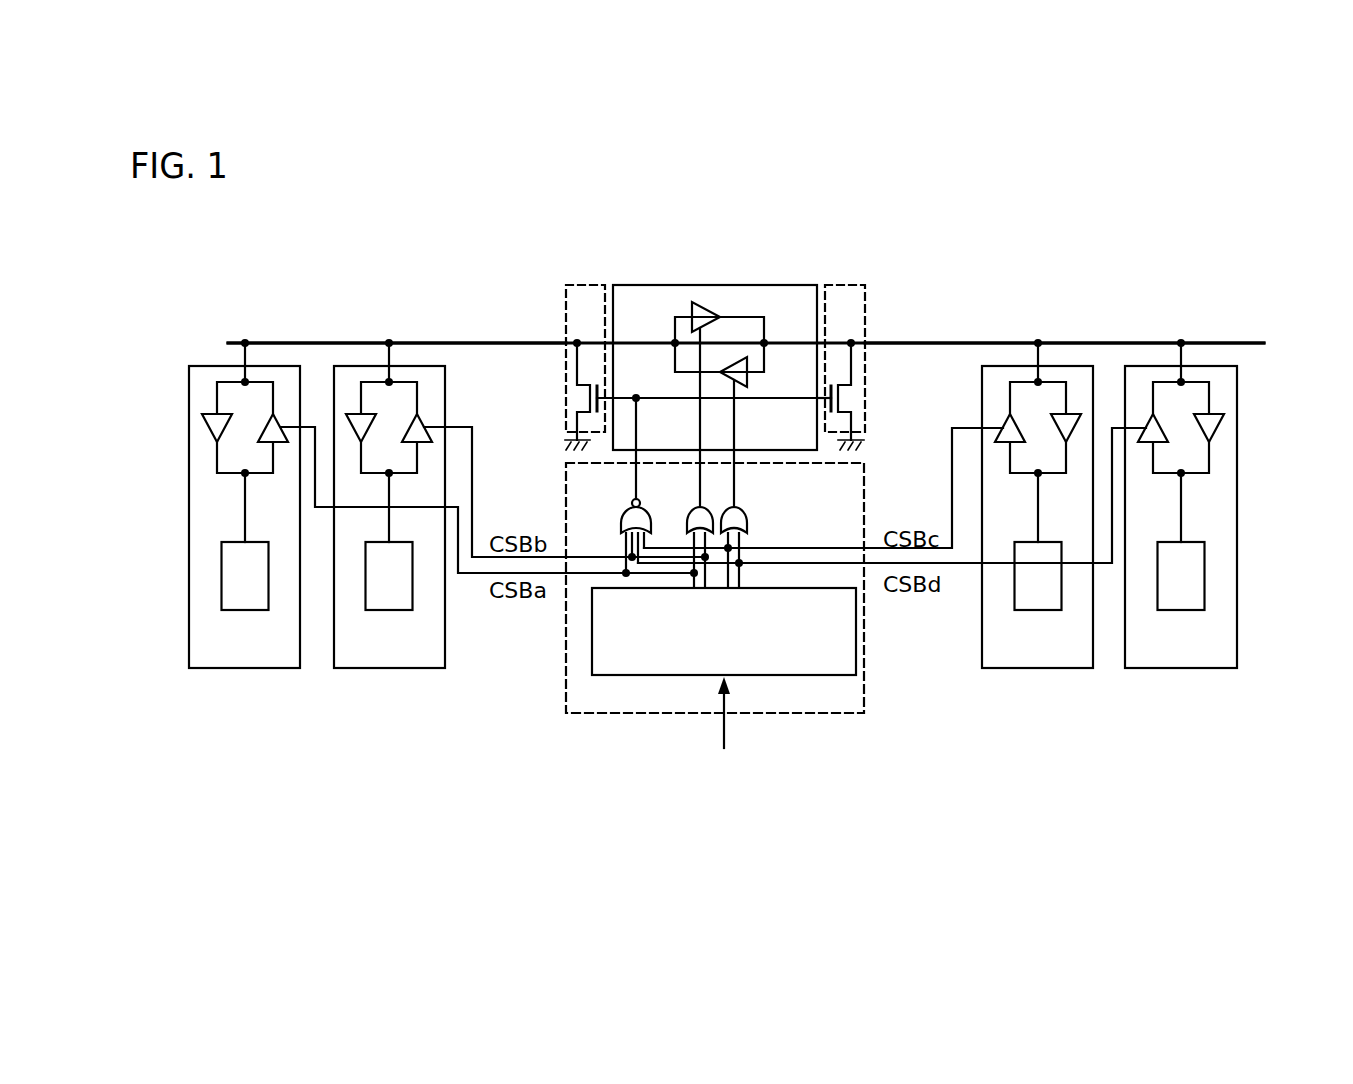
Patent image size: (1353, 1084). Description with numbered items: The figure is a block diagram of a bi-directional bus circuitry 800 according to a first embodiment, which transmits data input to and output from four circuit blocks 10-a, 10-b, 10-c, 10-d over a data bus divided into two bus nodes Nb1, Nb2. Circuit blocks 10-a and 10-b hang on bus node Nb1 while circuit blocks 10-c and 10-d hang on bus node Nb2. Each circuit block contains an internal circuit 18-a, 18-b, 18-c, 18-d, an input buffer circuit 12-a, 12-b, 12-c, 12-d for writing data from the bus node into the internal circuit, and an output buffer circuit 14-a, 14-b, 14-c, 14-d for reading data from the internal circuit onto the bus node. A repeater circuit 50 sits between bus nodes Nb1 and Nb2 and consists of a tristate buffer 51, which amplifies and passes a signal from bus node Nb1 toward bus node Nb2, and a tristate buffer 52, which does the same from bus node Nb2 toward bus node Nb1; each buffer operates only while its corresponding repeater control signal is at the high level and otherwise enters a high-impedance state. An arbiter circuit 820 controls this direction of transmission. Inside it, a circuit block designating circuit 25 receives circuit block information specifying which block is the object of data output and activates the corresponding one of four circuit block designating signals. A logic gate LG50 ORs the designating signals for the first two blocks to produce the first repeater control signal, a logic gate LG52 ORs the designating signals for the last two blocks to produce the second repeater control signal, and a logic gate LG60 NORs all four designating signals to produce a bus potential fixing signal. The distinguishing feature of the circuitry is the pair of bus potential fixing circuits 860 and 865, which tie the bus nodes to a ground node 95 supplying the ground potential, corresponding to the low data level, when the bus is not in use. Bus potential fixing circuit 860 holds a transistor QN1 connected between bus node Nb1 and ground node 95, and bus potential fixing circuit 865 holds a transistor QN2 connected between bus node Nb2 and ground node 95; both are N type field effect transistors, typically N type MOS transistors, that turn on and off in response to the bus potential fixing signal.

The bi-directional bus circuitry 800 is at (1252, 247).
The circuit block 10-a is at (211, 534).
The circuit block 10-b is at (411, 515).
The circuit block 10-c is at (1018, 516).
The circuit block 10-d is at (1216, 534).
The input buffer circuit 12-a is at (212, 431).
The input buffer circuit 12-b is at (358, 418).
The input buffer circuit 12-c is at (1002, 430).
The input buffer circuit 12-d is at (1160, 421).
The output buffer circuit 14-a is at (271, 417).
The output buffer circuit 14-b is at (414, 429).
The output buffer circuit 14-c is at (1075, 417).
The output buffer circuit 14-d is at (1215, 428).
The internal circuit 18-a is at (245, 612).
The internal circuit 18-b is at (389, 612).
The internal circuit 18-c is at (1038, 612).
The internal circuit 18-d is at (1181, 612).
The repeater circuit 50 is at (715, 396).
The tristate buffer 51 is at (712, 306).
The tristate buffer 52 is at (751, 379).
The ground node 95 is at (716, 401).
The bus potential fixing circuit 860 is at (583, 284).
The bus potential fixing circuit 865 is at (845, 284).
The arbiter circuit 820 is at (866, 697).
The circuit block designating circuit 25 is at (857, 641).
The transistor QN1 is at (576, 392).
The transistor QN2 is at (855, 392).
The bus node Nb1 is at (438, 342).
The bus node Nb2 is at (967, 342).
The logic gate LG60 is at (626, 514).
The logic gate LG50 is at (692, 514).
The logic gate LG52 is at (752, 519).